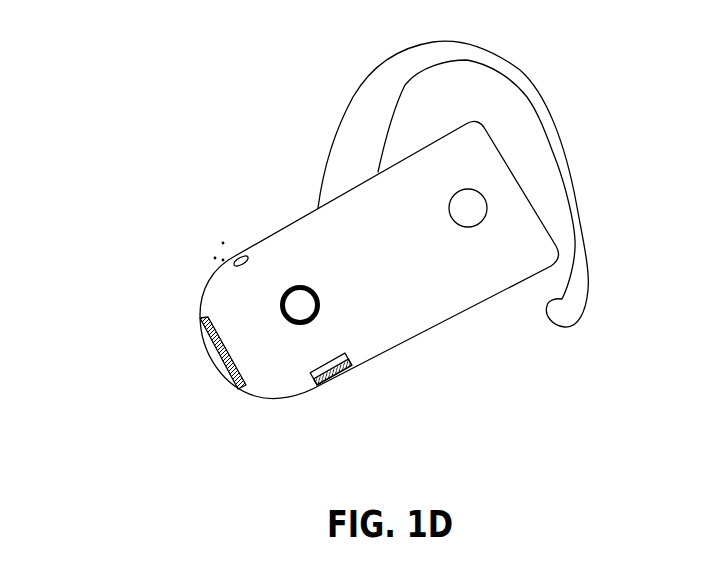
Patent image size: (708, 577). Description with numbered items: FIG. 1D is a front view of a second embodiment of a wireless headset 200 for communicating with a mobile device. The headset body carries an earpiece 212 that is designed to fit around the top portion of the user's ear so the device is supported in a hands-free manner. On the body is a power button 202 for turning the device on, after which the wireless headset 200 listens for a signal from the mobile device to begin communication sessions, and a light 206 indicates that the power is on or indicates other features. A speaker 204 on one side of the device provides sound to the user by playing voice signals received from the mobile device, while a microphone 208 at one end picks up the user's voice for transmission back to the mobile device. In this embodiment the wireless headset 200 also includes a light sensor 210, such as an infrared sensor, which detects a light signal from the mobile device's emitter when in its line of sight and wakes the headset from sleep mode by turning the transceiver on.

The wireless headset 200 is at (200, 307).
The power button 202 is at (320, 299).
The speaker 204 is at (470, 228).
The light 206 is at (238, 257).
The microphone 208 is at (213, 367).
The light sensor 210 is at (330, 383).
The earpiece 212 is at (547, 98).